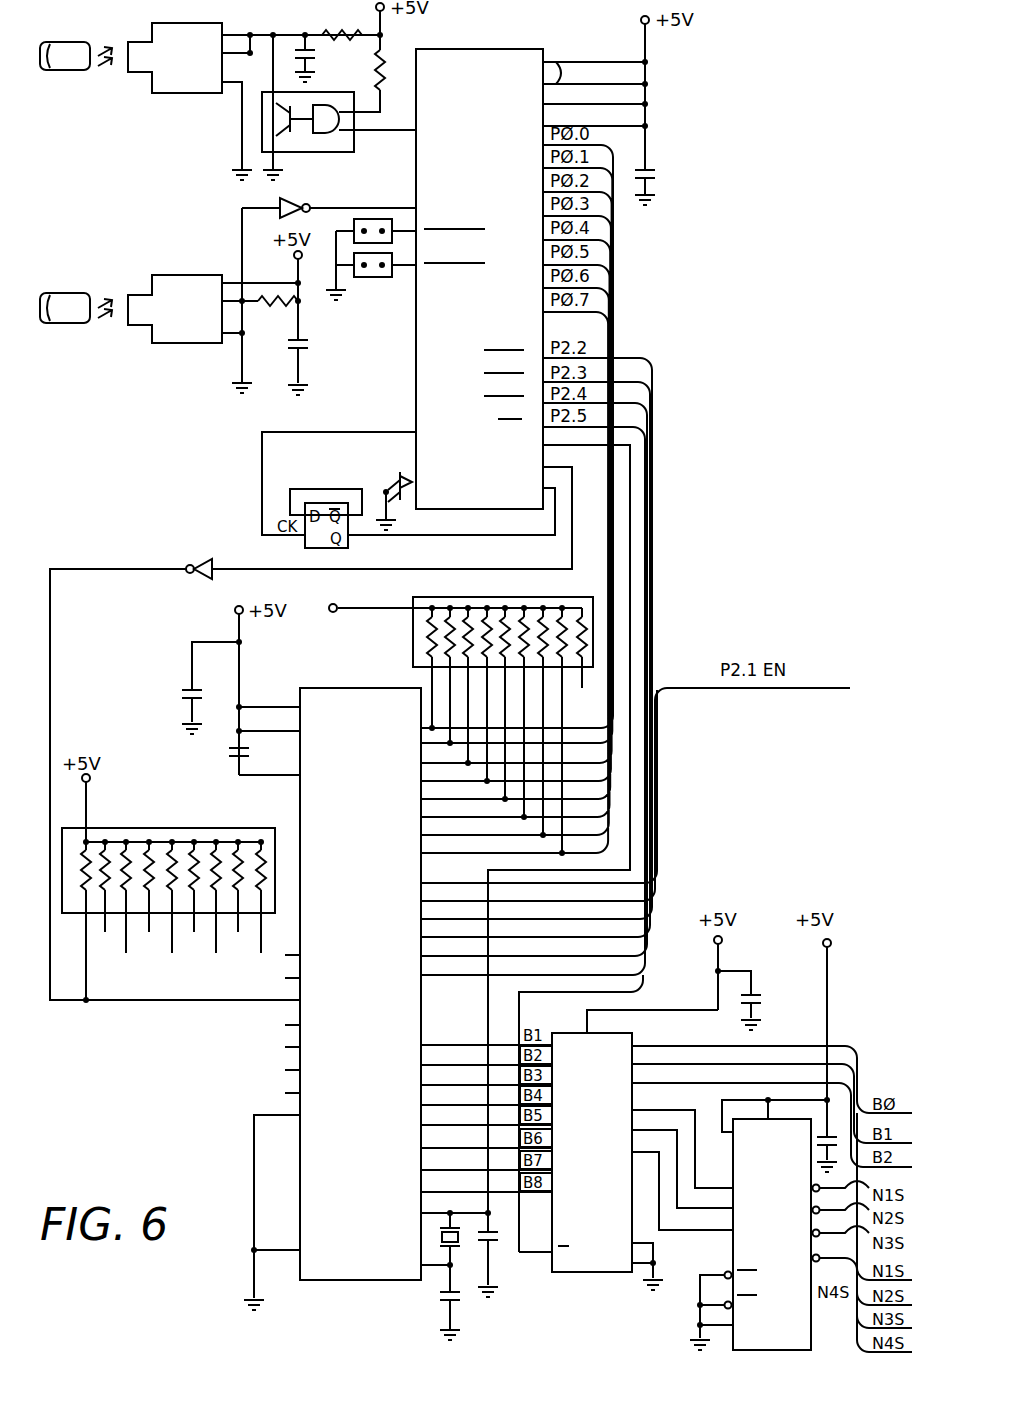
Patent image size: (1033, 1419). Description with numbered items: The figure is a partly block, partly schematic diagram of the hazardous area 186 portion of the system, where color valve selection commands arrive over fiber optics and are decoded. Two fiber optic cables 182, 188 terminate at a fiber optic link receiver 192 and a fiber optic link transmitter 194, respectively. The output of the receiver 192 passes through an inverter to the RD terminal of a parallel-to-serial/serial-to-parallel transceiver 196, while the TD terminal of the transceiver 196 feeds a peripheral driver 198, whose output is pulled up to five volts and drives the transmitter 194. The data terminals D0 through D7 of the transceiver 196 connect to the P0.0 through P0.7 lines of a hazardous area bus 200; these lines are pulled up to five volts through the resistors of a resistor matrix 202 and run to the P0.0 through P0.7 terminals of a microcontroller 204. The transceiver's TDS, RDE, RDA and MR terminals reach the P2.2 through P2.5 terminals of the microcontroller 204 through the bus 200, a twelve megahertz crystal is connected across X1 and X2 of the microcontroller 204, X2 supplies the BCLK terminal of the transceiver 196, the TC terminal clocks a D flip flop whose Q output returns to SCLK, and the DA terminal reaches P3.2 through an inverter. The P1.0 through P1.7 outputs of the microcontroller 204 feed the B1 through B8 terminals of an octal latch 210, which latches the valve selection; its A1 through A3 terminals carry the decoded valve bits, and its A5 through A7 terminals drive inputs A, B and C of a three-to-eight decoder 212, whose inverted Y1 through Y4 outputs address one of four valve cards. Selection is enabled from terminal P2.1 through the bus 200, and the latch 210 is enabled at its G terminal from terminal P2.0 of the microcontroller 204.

The fiber optic cable 182 is at (100, 286).
The hazardous area 186 is at (157, 502).
The fiber optic cable 188 is at (67, 92).
The fiber optic link receiver 192 is at (192, 243).
The fiber optic link transmitter 194 is at (170, 108).
The parallel-to-serial/serial-to-parallel transceiver 196 is at (406, 350).
The peripheral driver 198 is at (366, 157).
The hazardous area bus 200 is at (645, 280).
The resistor matrix 202 is at (408, 648).
The microcontroller 204 is at (296, 686).
The octal latch 210 is at (572, 1282).
The three-to-eight decoder 212 is at (716, 1255).